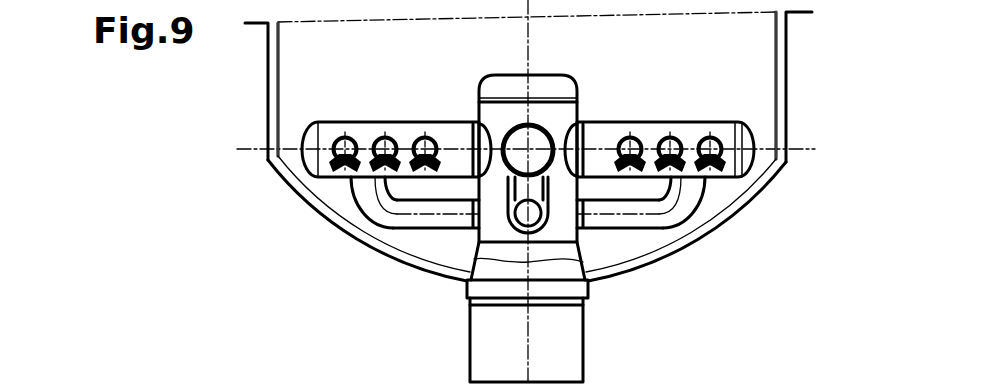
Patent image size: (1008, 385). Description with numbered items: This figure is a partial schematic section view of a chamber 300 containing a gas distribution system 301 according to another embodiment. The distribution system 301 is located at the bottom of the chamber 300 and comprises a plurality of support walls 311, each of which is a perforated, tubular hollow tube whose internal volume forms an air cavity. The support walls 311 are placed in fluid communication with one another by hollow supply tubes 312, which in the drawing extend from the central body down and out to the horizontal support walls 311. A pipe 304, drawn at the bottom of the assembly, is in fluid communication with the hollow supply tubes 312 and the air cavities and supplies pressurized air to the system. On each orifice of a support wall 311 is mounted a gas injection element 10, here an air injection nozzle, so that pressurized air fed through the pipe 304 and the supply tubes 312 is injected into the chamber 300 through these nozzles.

The chamber 300 is at (268, 63).
The gas injection element 10 is at (277, 172).
The distribution system 301 is at (719, 112).
The support wall 311 is at (630, 136).
The hollow supply tube 312 is at (770, 160).
The pipe 304 is at (585, 322).